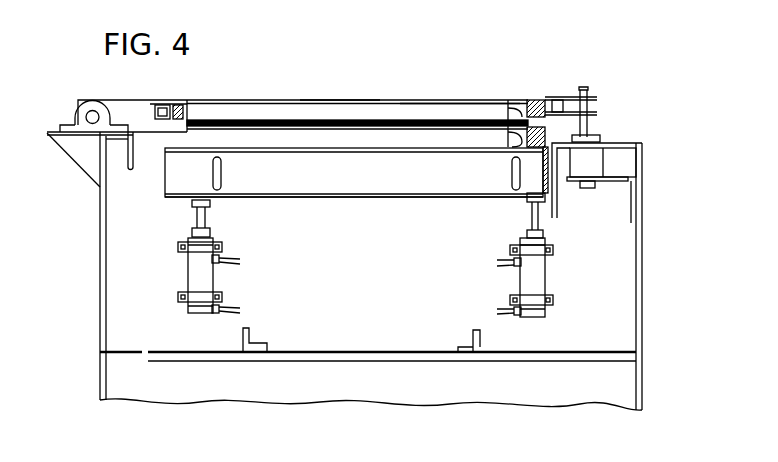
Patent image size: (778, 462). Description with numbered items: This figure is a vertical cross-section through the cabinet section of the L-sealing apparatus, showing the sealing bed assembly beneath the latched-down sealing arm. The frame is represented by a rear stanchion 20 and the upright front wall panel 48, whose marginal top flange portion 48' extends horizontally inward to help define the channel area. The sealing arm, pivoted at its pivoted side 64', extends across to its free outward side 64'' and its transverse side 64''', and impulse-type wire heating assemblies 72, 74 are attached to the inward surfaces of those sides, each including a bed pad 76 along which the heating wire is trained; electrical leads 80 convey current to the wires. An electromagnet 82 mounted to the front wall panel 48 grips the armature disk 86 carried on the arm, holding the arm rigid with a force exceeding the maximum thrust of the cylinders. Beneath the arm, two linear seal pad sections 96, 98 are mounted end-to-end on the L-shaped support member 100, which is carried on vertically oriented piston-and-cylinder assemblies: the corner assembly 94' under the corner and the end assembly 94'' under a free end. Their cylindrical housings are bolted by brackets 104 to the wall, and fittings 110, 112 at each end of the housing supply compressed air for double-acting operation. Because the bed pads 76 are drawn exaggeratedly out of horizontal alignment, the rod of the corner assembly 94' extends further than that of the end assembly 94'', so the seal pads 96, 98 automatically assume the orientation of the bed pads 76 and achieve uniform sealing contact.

The rear stanchion 20 is at (98, 278).
The front wall panel 48 is at (665, 188).
The marginal top flange portion 48' is at (626, 178).
The pivoted side 64' is at (294, 103).
The free outward side 64'' is at (565, 95).
The transverse side 64''' is at (357, 96).
The wire heating assembly 72 is at (526, 99).
The wire heating assembly 74 is at (393, 100).
The bed pad 76 is at (433, 100).
The electrical leads 80 is at (173, 100).
The electromagnet 82 is at (593, 163).
The armature disk 86 is at (597, 137).
The corner piston-and-cylinder assembly 94' is at (505, 255).
The end piston-and-cylinder assembly 94'' is at (166, 258).
The seal pad section 96 is at (525, 126).
The seal pad section 98 is at (348, 140).
The support member 100 is at (348, 199).
The bracket 104 is at (178, 245).
The fitting 110 is at (216, 257).
The fitting 112 is at (220, 313).